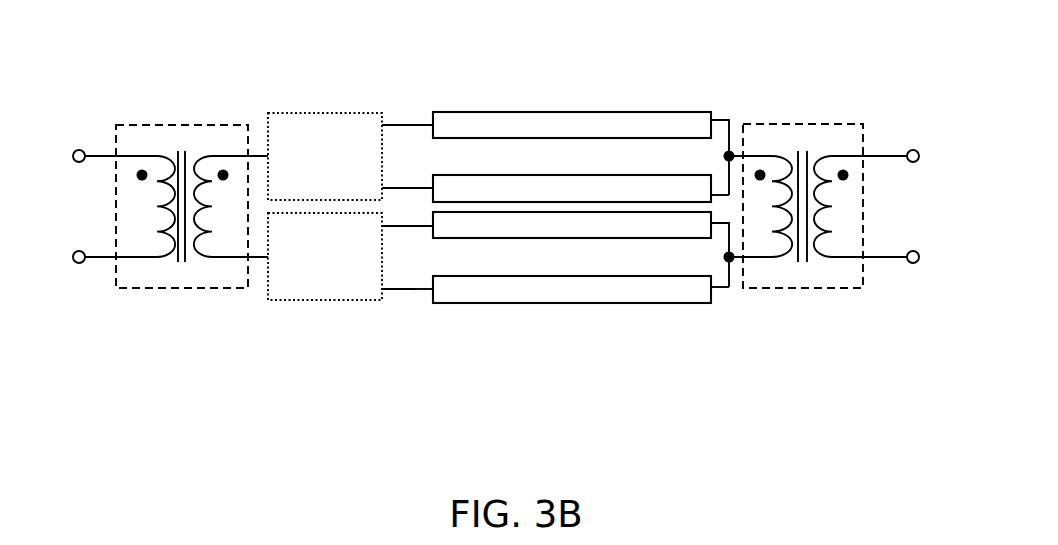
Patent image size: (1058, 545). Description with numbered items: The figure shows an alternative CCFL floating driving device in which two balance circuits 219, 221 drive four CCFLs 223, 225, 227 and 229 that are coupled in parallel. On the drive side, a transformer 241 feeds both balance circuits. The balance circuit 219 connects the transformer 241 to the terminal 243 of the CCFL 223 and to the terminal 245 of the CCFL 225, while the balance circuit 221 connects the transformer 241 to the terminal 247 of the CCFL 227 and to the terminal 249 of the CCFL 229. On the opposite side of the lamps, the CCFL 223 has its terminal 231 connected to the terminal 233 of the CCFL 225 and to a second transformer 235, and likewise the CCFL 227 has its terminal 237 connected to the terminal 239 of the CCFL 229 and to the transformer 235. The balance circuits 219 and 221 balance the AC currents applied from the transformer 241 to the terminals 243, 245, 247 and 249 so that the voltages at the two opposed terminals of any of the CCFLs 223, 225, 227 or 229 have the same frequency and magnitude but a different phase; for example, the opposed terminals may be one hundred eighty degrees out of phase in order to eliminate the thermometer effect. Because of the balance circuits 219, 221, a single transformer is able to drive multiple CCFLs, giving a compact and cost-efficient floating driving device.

The balance circuit 219 is at (307, 111).
The balance circuit 221 is at (322, 301).
The CCFL 223 is at (637, 111).
The CCFL 225 is at (472, 116).
The CCFL 227 is at (485, 238).
The CCFL 229 is at (637, 303).
The terminal 231 is at (713, 121).
The terminal 233 is at (714, 196).
The transformer 235 is at (803, 288).
The terminal 237 is at (715, 224).
The terminal 239 is at (715, 288).
The transformer 241 is at (188, 288).
The terminal 243 is at (431, 124).
The terminal 245 is at (430, 188).
The terminal 247 is at (383, 289).
The terminal 249 is at (431, 291).